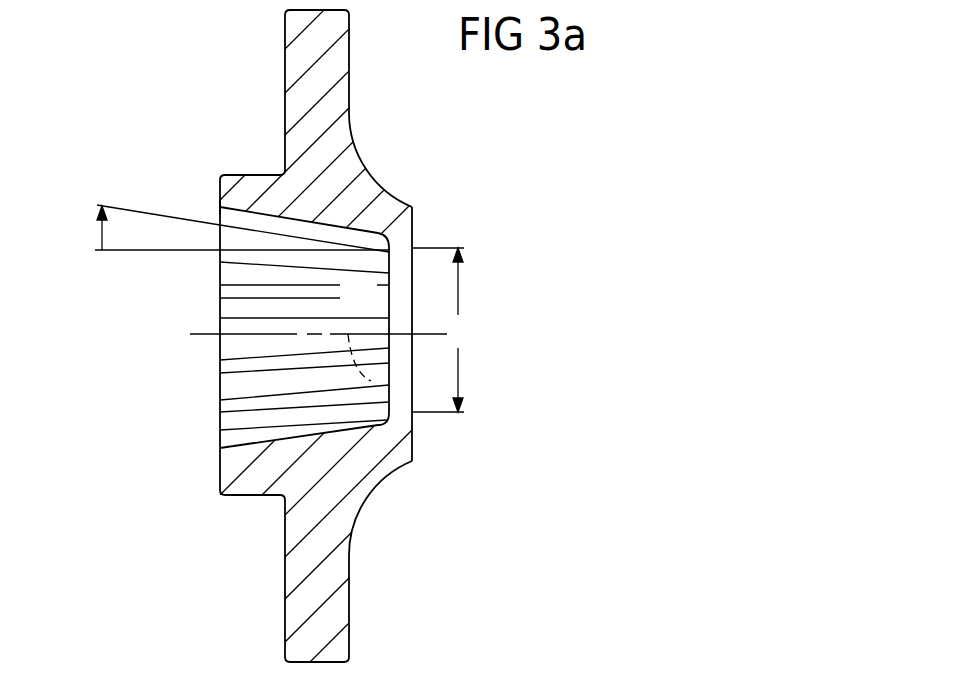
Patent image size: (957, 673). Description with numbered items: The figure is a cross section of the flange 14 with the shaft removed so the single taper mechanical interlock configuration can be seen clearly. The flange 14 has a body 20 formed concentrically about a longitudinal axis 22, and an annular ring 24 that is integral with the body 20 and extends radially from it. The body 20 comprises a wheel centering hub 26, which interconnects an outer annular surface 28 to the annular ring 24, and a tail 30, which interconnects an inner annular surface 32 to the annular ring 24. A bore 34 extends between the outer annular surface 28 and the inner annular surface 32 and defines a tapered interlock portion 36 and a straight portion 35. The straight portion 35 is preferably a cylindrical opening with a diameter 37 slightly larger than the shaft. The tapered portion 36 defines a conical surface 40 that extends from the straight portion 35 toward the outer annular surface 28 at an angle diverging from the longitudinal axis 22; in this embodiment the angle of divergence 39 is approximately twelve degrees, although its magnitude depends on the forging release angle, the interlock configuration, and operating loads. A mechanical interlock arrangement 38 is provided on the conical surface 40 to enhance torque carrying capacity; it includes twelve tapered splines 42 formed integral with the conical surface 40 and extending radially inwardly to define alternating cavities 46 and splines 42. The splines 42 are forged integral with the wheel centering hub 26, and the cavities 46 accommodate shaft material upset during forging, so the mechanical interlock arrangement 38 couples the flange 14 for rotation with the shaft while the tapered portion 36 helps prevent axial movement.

The flange 14 is at (238, 94).
The body 20 is at (230, 146).
The longitudinal axis 22 is at (371, 381).
The annular ring 24 is at (338, 28).
The wheel centering hub 26 is at (243, 478).
The outer annular surface 28 is at (220, 178).
The tail 30 is at (412, 182).
The inner annular surface 32 is at (412, 230).
The bore 34 is at (375, 304).
The straight portion 35 is at (398, 248).
The tapered interlock portion 36 is at (208, 276).
The diameter 37 is at (334, 330).
The mechanical interlock arrangement 38 is at (226, 440).
The angle of divergence 39 is at (102, 237).
The conical surface 40 is at (220, 210).
The tapered splines 42 is at (217, 325).
The cavities 46 is at (230, 237).